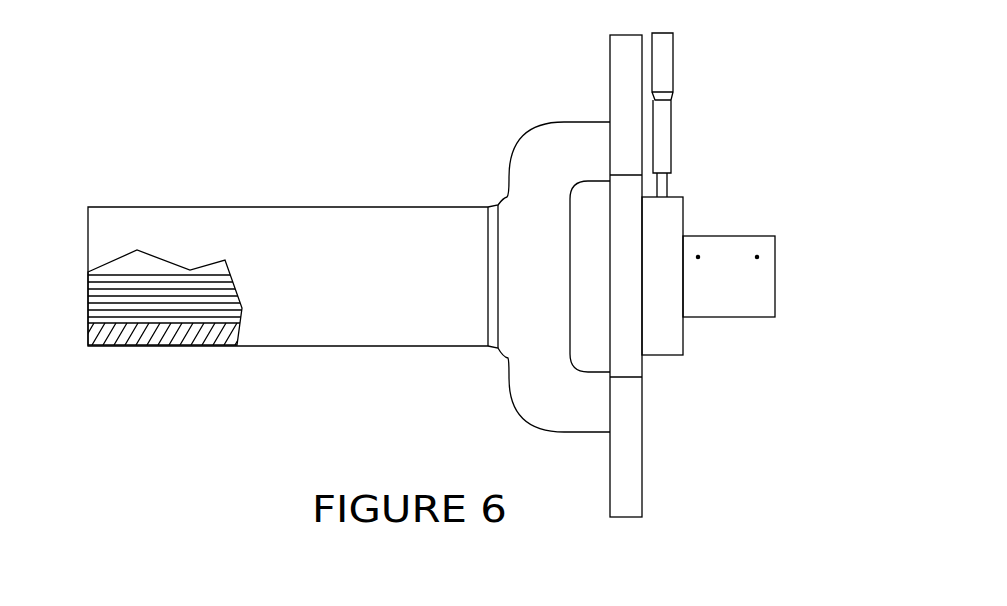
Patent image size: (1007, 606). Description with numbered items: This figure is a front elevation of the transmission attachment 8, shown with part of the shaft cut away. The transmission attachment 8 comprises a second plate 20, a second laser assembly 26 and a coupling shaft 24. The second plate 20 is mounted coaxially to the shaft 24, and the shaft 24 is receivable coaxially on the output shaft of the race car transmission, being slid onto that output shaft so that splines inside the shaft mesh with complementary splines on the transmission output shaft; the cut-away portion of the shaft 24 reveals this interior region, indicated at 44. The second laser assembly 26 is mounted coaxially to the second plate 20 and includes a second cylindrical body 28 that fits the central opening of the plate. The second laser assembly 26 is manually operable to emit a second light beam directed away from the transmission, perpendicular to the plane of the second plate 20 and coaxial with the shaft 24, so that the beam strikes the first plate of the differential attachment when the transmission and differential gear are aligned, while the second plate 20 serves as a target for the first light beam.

The transmission attachment 8 is at (507, 128).
The second plate 20 is at (642, 465).
The coupling shaft 24 is at (375, 305).
The second laser assembly 26 is at (727, 253).
The second cylindrical body 28 is at (668, 236).
The hatched filler material 44 is at (153, 305).